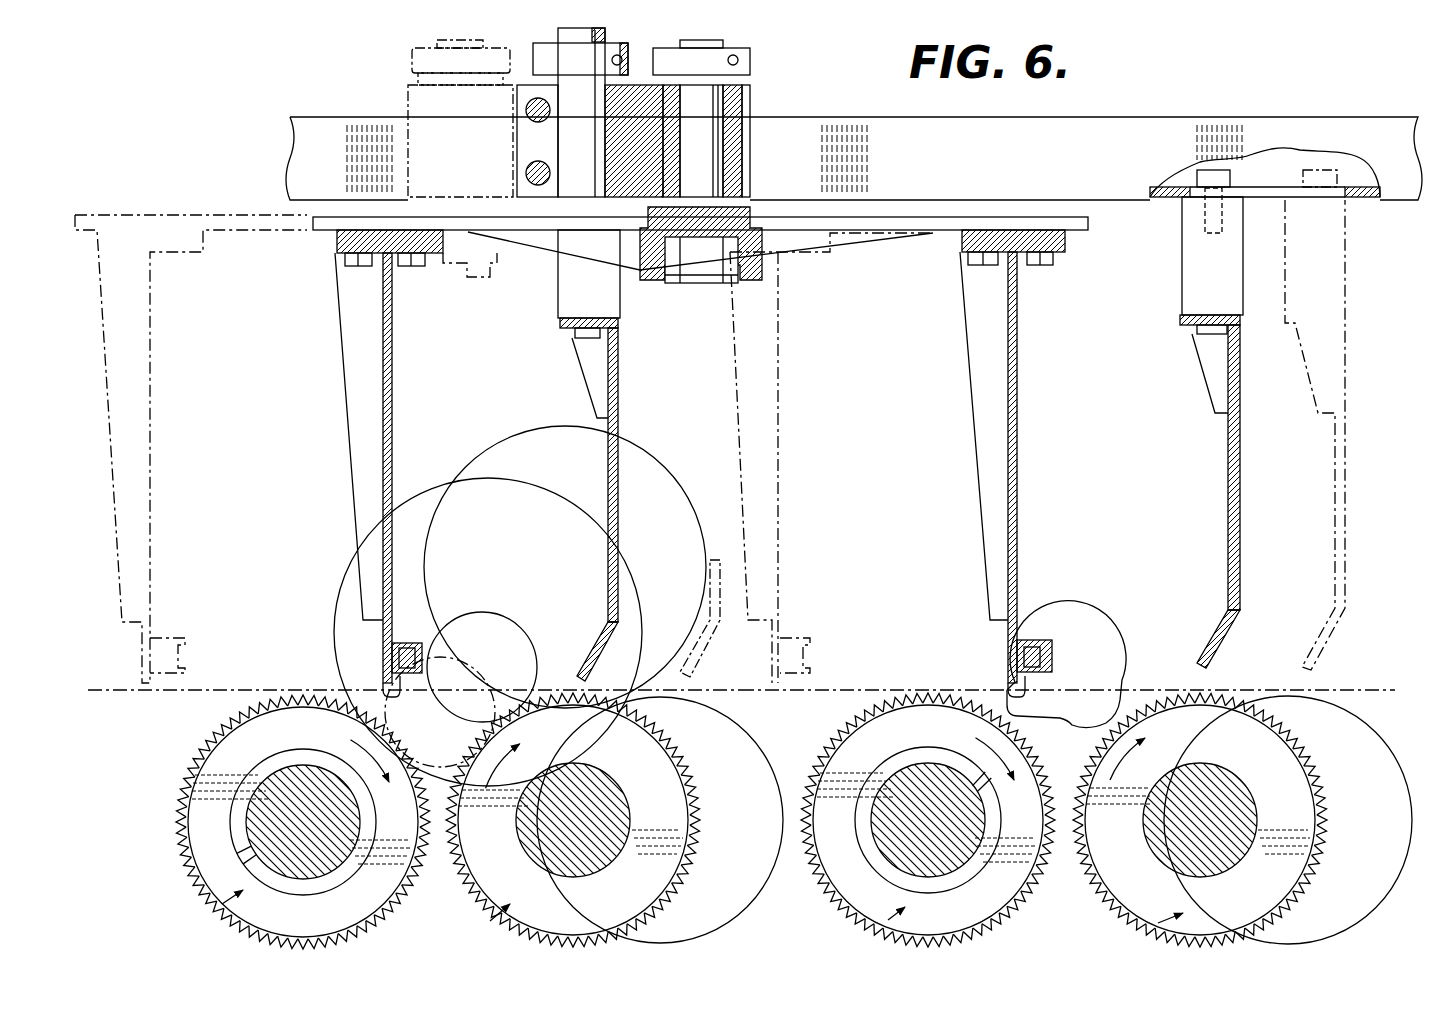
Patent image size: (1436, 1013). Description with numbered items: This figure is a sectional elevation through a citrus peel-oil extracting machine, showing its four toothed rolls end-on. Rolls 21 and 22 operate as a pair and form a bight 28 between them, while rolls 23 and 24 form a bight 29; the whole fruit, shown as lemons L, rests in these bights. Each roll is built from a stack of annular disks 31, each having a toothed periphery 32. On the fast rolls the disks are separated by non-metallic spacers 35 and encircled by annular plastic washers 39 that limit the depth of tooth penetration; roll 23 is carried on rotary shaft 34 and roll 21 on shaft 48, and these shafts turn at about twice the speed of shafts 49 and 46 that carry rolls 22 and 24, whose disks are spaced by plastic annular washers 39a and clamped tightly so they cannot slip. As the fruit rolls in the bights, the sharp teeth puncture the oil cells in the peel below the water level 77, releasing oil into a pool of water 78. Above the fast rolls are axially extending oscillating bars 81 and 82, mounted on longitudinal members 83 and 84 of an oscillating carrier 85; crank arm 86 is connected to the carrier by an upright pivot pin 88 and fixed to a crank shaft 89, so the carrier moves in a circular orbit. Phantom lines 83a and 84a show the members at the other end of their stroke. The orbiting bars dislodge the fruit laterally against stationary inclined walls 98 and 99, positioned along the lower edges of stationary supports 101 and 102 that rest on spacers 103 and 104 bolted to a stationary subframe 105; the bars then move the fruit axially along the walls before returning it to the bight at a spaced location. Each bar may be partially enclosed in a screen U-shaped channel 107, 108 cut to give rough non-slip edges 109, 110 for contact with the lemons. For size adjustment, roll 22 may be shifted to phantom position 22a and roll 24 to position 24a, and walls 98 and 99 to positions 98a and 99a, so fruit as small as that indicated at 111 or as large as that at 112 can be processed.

The roll 21 is at (212, 905).
The roll 22 is at (500, 913).
The phantom line position of roll 22 22a is at (752, 906).
The roll 23 is at (893, 921).
The roll 24 is at (1150, 921).
The phantom line position of roll 24 24a is at (1335, 940).
The bight 28 is at (436, 786).
The bight 29 is at (1066, 791).
The annular disk 31 is at (978, 926).
The toothed periphery 32 is at (190, 759).
The rotary shaft 34 is at (916, 771).
The spacer 35 is at (238, 846).
The annular plastic washer 39 is at (205, 836).
The plastic annular washer 39a is at (488, 885).
The shaft 46 is at (1240, 806).
The shaft 48 is at (272, 803).
The shaft 49 is at (620, 823).
The water level 77 is at (858, 690).
The pool of water 78 is at (210, 698).
The oscillating bar 81 is at (405, 645).
The oscillating bar 82 is at (1030, 647).
The longitudinal member 83 is at (392, 416).
The phantom line 83a is at (150, 480).
The longitudinal member 84 is at (1017, 419).
The phantom line 84a is at (780, 450).
The oscillating carrier 85 is at (882, 216).
The crank arm 86 is at (652, 139).
The upright pivot pin 88 is at (683, 119).
The crank shaft 89 is at (568, 116).
The stationary inclined wall 98 is at (584, 660).
The phantom line position of wall 98 98a is at (705, 661).
The stationary inclined wall 99 is at (1222, 653).
The phantom line position of wall 99 99a is at (1325, 652).
The stationary support 101 is at (618, 412).
The stationary support 102 is at (1240, 414).
The spacer 103 is at (606, 296).
The spacer 104 is at (1196, 276).
The stationary subframe 105 is at (1205, 121).
The U-shaped channel 107 is at (386, 683).
The U-shaped channel 108 is at (1010, 683).
The rough non-slip edge 109 is at (422, 668).
The rough non-slip edge 110 is at (1052, 668).
The small citrus fruit 111 is at (485, 676).
The large citrus fruit 112 is at (557, 500).
The lemon L is at (1122, 587).